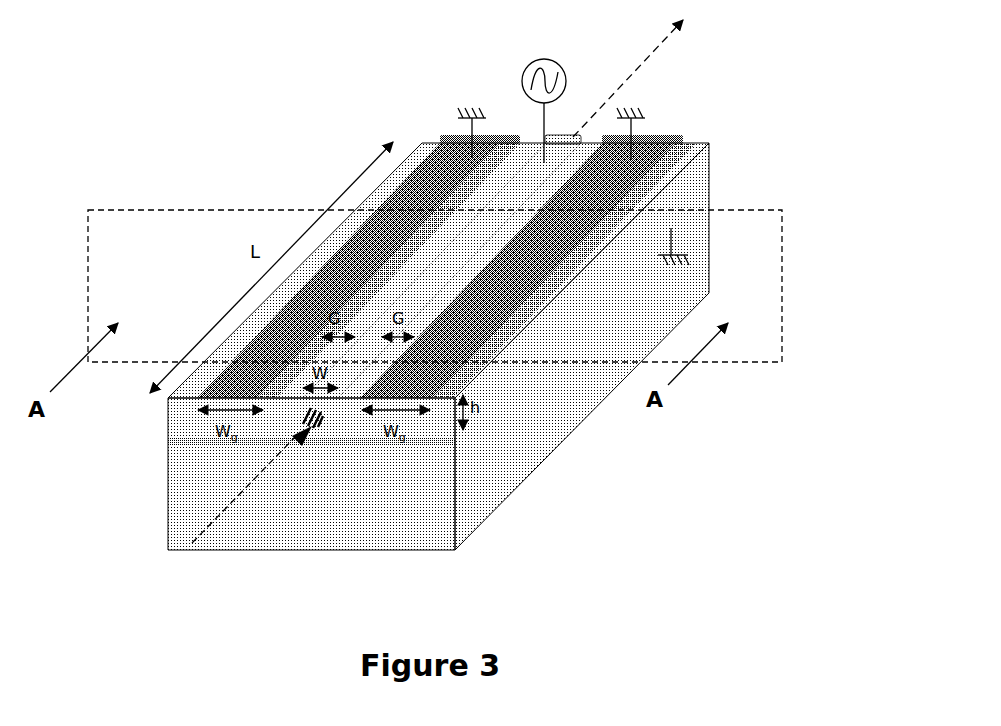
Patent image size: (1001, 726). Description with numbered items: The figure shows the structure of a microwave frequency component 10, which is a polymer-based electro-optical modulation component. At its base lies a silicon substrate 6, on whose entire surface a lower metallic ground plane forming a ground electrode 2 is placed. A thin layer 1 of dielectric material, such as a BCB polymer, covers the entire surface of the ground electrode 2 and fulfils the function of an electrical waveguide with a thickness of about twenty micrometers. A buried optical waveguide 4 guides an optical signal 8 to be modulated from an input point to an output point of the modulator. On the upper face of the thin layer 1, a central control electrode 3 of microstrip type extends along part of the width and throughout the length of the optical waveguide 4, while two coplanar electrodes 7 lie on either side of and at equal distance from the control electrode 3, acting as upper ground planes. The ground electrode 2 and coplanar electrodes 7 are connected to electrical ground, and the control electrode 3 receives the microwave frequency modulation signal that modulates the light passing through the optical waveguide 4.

The microwave frequency component 10 is at (256, 66).
The thin layer 1 is at (185, 415).
The ground electrode 2 is at (405, 346).
The central control electrode 3 is at (412, 297).
The buried optical waveguide 4 is at (320, 425).
The silicon substrate 6 is at (470, 495).
The coplanar electrodes 7 is at (433, 208).
The optical signal 8 is at (208, 526).